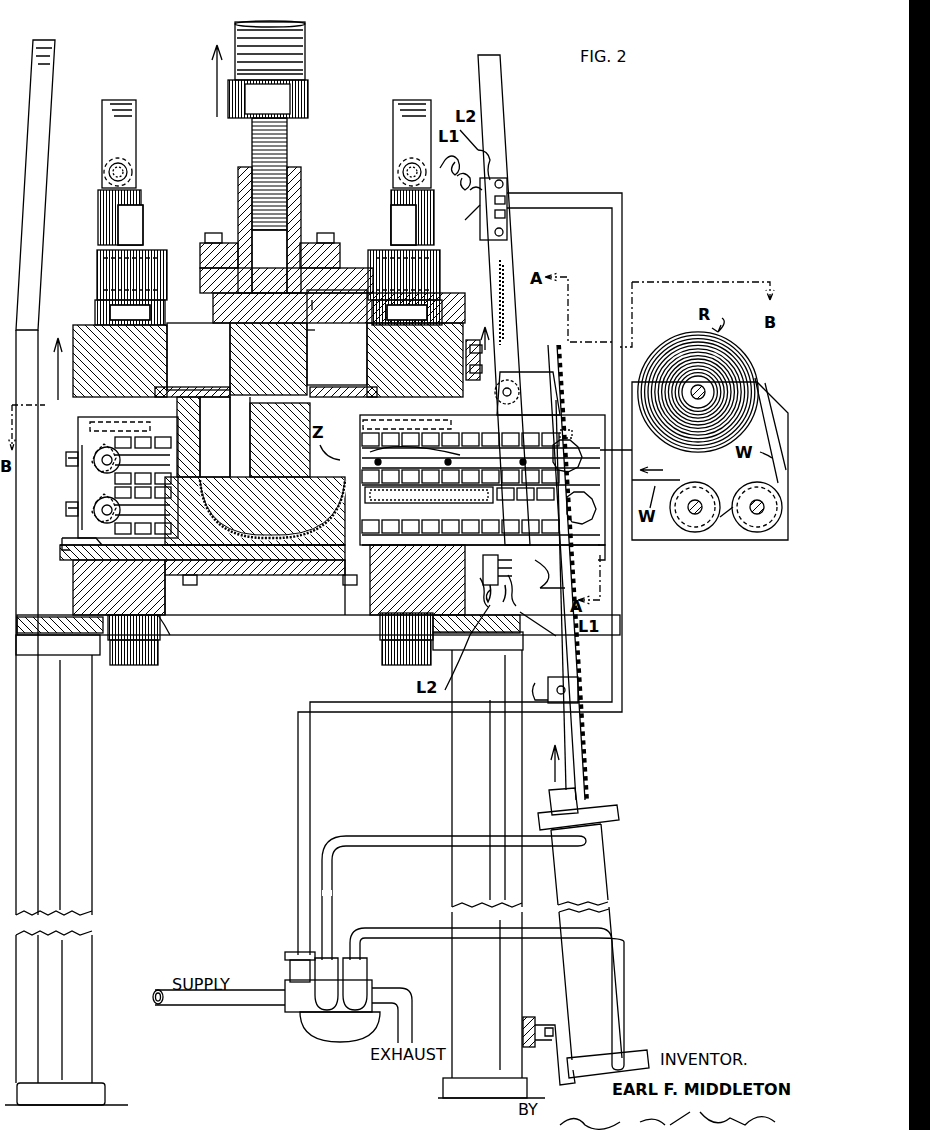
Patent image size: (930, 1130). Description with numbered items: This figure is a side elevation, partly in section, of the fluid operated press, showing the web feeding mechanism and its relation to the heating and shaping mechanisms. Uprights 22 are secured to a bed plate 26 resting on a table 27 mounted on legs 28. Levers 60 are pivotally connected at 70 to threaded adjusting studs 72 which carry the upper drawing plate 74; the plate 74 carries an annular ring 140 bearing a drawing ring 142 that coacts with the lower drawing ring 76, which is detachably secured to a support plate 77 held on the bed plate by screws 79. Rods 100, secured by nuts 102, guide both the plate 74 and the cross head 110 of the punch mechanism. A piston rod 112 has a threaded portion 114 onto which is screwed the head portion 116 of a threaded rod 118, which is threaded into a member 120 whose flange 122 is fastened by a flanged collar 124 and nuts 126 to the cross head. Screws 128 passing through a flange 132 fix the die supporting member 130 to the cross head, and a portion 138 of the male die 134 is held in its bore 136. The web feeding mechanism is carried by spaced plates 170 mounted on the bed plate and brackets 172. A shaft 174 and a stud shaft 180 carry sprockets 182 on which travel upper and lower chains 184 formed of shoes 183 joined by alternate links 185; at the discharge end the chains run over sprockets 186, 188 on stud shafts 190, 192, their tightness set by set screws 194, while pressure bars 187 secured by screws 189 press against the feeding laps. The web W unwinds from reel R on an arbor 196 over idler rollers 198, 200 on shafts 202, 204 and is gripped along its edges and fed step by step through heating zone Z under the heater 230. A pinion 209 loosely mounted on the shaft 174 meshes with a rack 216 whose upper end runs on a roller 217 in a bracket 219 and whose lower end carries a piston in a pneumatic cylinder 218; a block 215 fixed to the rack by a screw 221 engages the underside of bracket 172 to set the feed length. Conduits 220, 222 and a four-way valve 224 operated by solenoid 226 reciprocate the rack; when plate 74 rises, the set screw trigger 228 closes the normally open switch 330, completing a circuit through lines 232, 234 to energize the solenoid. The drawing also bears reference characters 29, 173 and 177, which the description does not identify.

The uprights 22 is at (55, 60).
The bed plate 26 is at (178, 640).
The table 27 is at (258, 628).
The legs 28 is at (80, 782).
The base 29 is at (100, 1085).
The levers 60 is at (133, 132).
The pivotal connection 70 is at (108, 172).
The threaded adjusting studs 72 is at (98, 205).
The upper drawing plate 74 is at (80, 328).
The lower drawing ring 76 is at (238, 565).
The support plate 77 is at (172, 568).
The screws 79 is at (197, 580).
The rods 100 is at (158, 660).
The nuts 102 is at (138, 645).
The cross head 110 is at (440, 265).
The rod 112 is at (305, 26).
The threaded portion 114 is at (305, 68).
The head portion 116 is at (308, 98).
The threaded rod 118 is at (287, 142).
The member 120 is at (301, 178).
The flange 122 is at (200, 255).
The flanged collar 124 is at (340, 240).
The nuts 126 is at (213, 233).
The screws 128 is at (330, 334).
The male die supporting member 130 is at (310, 358).
The flange 132 is at (332, 311).
The male die 134 is at (288, 535).
The bore 136 is at (310, 378).
The portion of die 138 is at (250, 450).
The annular ring 140 is at (215, 388).
The drawing ring 142 is at (210, 395).
The spaced plates 170 is at (58, 405).
The brackets 172 is at (405, 650).
The lever 173 is at (555, 585).
The shaft 174 is at (632, 450).
The bracket 177 is at (542, 688).
The stud shaft 180 is at (590, 560).
The sprockets 182 is at (580, 408).
The shoes 183 is at (380, 420).
The chains 184 is at (96, 446).
The links 185 is at (170, 428).
The sprocket 186 is at (120, 460).
The pressure bars 187 is at (488, 460).
The sprocket 188 is at (122, 510).
The screws 189 is at (450, 450).
The stud shaft 190 is at (72, 452).
The stud shaft 192 is at (78, 525).
The set screws 194 is at (78, 470).
The arbor 196 is at (695, 385).
The idler roller 198 is at (735, 528).
The idler roller 200 is at (686, 530).
The shaft 202 is at (760, 520).
The shaft 204 is at (698, 500).
The pinion 209 is at (566, 428).
The block 215 is at (570, 678).
The rack 216 is at (552, 358).
The roller 217 is at (552, 395).
The pneumatic cylinder 218 is at (600, 870).
The bracket 219 is at (538, 372).
The conduit 220 is at (420, 830).
The screw 221 is at (578, 690).
The conduit 222 is at (440, 928).
The four-way valve 224 is at (340, 1012).
The solenoid 226 is at (290, 965).
The set screw 228 is at (466, 345).
The heater 230 is at (410, 508).
The line 232 is at (622, 280).
The line 234 is at (605, 262).
The normally open switch 330 is at (470, 220).